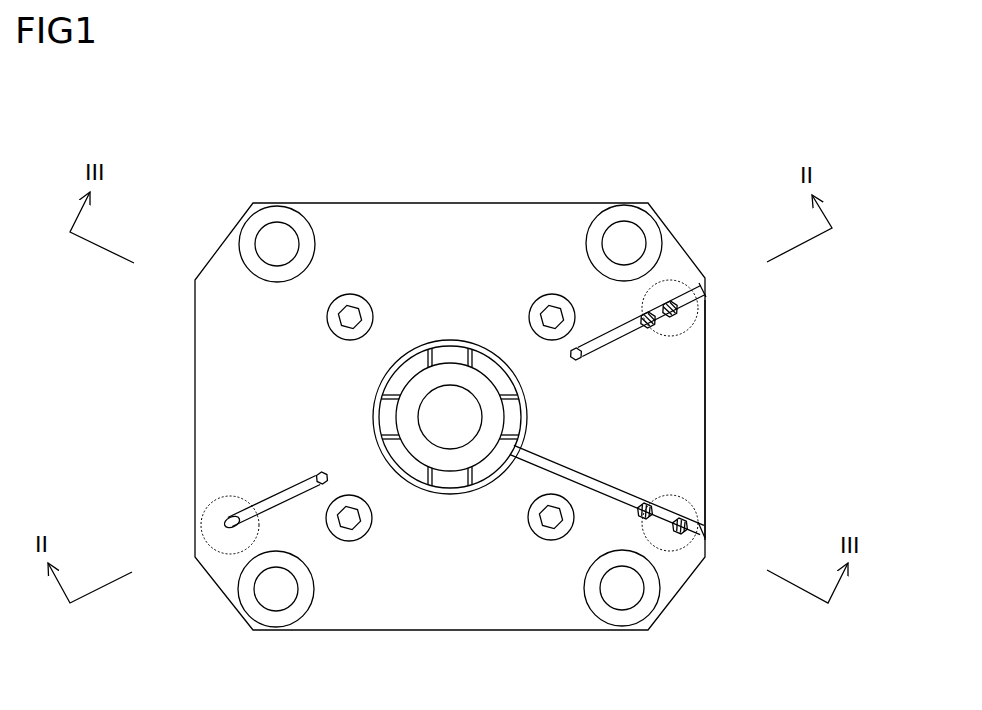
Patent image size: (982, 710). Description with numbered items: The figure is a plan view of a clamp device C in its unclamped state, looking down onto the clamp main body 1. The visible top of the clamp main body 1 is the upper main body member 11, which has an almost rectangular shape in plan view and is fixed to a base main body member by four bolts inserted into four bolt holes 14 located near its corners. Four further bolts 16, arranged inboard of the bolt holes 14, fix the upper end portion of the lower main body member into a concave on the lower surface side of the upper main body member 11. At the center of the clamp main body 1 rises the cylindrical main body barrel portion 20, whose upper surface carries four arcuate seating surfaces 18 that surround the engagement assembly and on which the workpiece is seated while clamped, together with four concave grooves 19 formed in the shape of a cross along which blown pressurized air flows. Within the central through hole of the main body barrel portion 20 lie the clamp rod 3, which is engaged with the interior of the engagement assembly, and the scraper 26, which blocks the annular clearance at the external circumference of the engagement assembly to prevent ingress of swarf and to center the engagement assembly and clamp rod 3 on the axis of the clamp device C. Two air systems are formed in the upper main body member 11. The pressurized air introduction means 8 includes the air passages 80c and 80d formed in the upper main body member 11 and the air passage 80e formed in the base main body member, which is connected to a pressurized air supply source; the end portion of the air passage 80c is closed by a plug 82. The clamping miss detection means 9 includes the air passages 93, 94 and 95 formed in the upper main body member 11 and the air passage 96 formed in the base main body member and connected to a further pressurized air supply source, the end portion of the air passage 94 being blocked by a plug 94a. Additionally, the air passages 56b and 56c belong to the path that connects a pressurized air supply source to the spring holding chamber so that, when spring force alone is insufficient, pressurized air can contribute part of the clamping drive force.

The clamp main body 1 is at (428, 202).
The clamp rod 3 is at (448, 430).
The pressurized air introduction means 8 is at (692, 481).
The clamping miss detection means 9 is at (680, 266).
The upper main body member 11 is at (707, 410).
The bolt holes 14 is at (632, 232).
The bolts 16 is at (358, 304).
The arcuate seating surfaces 18 is at (497, 372).
The concave grooves 19 is at (522, 426).
The main body barrel portion 20 is at (374, 412).
The scraper 26 is at (453, 368).
The air passage 56b is at (265, 497).
The air passage 56c is at (219, 533).
The air passage 80c is at (598, 478).
The air passage 80d is at (647, 521).
The air passage 80e is at (700, 518).
The plug 82 is at (707, 541).
The air passage 93 is at (575, 362).
The air passage 94 is at (620, 343).
The plug 94a is at (708, 298).
The air passage 95 is at (655, 332).
The air passage 96 is at (694, 322).
The clamp device C is at (600, 133).